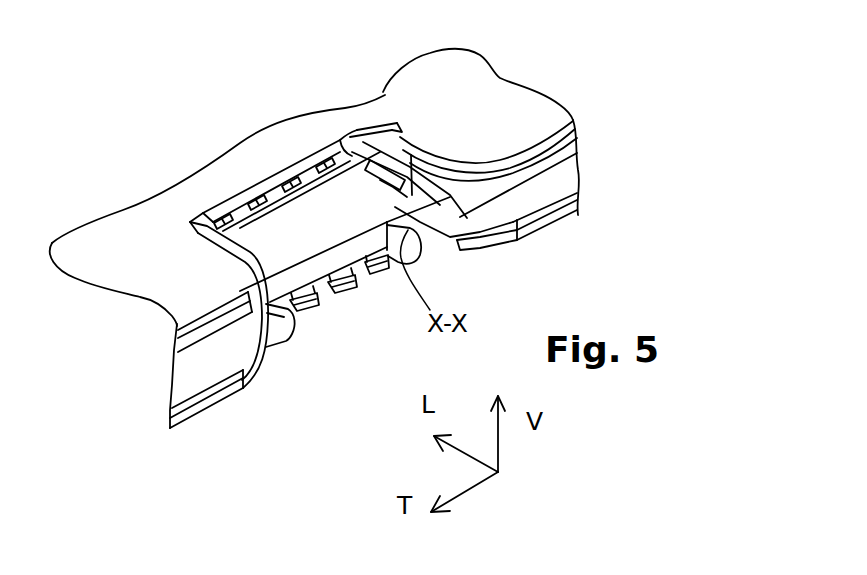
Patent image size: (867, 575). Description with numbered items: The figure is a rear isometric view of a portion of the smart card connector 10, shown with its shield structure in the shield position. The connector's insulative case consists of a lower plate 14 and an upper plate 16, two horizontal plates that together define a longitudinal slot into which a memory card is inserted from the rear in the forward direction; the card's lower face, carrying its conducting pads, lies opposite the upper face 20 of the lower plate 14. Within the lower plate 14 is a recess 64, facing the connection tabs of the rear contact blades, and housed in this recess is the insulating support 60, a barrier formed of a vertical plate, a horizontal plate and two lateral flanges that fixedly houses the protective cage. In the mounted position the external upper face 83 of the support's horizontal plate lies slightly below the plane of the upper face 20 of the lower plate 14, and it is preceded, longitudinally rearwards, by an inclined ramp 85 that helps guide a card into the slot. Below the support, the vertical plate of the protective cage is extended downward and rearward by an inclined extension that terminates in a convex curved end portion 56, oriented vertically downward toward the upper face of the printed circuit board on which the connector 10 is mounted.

The smart card connector 10 is at (176, 186).
The lower plate 14 is at (234, 401).
The upper plate 16 is at (477, 114).
The upper face of the lower plate 20 is at (330, 162).
The convex curved end portion 56 is at (317, 307).
The insulating support 60 is at (347, 229).
The recess 64 is at (285, 252).
The external upper face of the horizontal plate 83 is at (262, 255).
The inclined ramp 85 is at (307, 260).